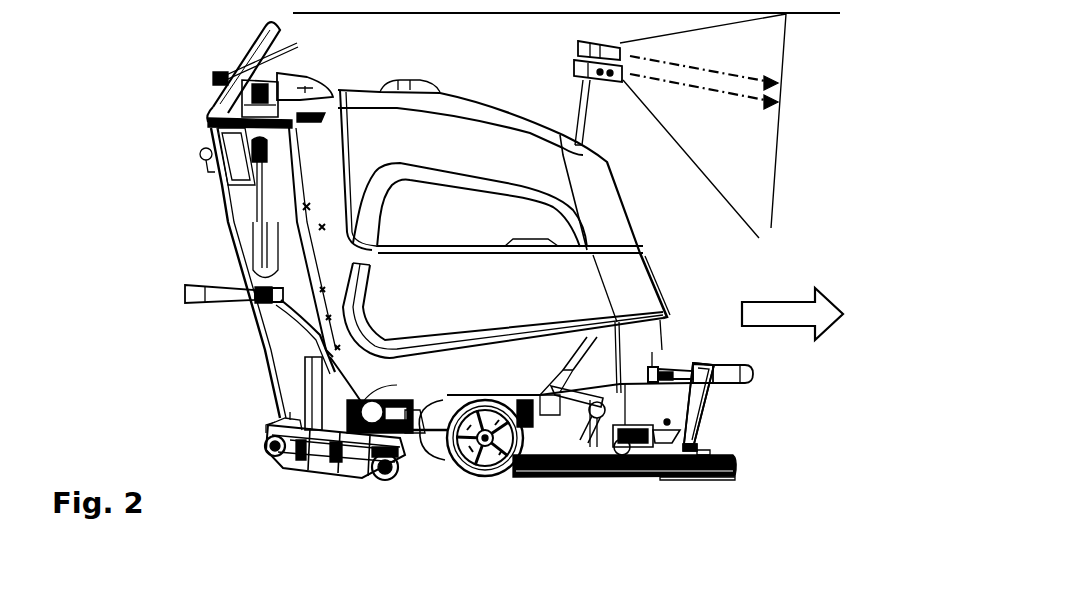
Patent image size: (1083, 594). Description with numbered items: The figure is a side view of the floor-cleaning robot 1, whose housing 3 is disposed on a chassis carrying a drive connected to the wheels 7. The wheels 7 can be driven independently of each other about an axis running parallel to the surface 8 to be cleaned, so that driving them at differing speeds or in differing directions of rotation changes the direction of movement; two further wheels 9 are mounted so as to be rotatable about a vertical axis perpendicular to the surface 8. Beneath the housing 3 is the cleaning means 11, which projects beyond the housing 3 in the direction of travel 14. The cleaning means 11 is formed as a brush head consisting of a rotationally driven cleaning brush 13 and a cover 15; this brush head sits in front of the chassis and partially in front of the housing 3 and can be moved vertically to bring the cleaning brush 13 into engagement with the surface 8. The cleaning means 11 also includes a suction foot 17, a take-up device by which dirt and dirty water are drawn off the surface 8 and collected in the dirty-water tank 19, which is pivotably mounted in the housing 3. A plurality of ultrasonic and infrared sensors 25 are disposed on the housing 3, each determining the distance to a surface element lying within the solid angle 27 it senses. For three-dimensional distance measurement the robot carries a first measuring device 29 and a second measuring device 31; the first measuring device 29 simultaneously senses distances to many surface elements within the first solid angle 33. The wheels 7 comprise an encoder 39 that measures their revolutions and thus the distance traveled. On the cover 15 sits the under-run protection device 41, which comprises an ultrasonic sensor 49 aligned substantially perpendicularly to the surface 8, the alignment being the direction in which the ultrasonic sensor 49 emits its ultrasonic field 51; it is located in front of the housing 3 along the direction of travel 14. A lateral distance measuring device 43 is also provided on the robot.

The floor-cleaning robot 1 is at (168, 149).
The housing 3 is at (637, 296).
The wheels 7 is at (453, 473).
The surface to be cleaned 8 is at (389, 547).
The further wheels 9 is at (370, 473).
The cleaning means 11 is at (233, 423).
The cleaning brush 13 is at (687, 473).
The direction of travel 14 is at (787, 317).
The cover 15 is at (733, 453).
The suction foot 17 is at (283, 462).
The dirty-water tank 19 is at (593, 189).
The ultrasonic and infrared sensors 25 is at (272, 313).
The solid angle 27 is at (185, 292).
The first measuring device 29 is at (577, 46).
The second measuring device 31 is at (574, 70).
The first solid angle 33 is at (744, 150).
The encoder 39 is at (503, 457).
The under-run protection device 41 is at (693, 444).
The lateral distance measuring device 43 is at (633, 473).
The ultrasonic sensor 49 is at (693, 444).
The ultrasonic field 51 is at (697, 360).